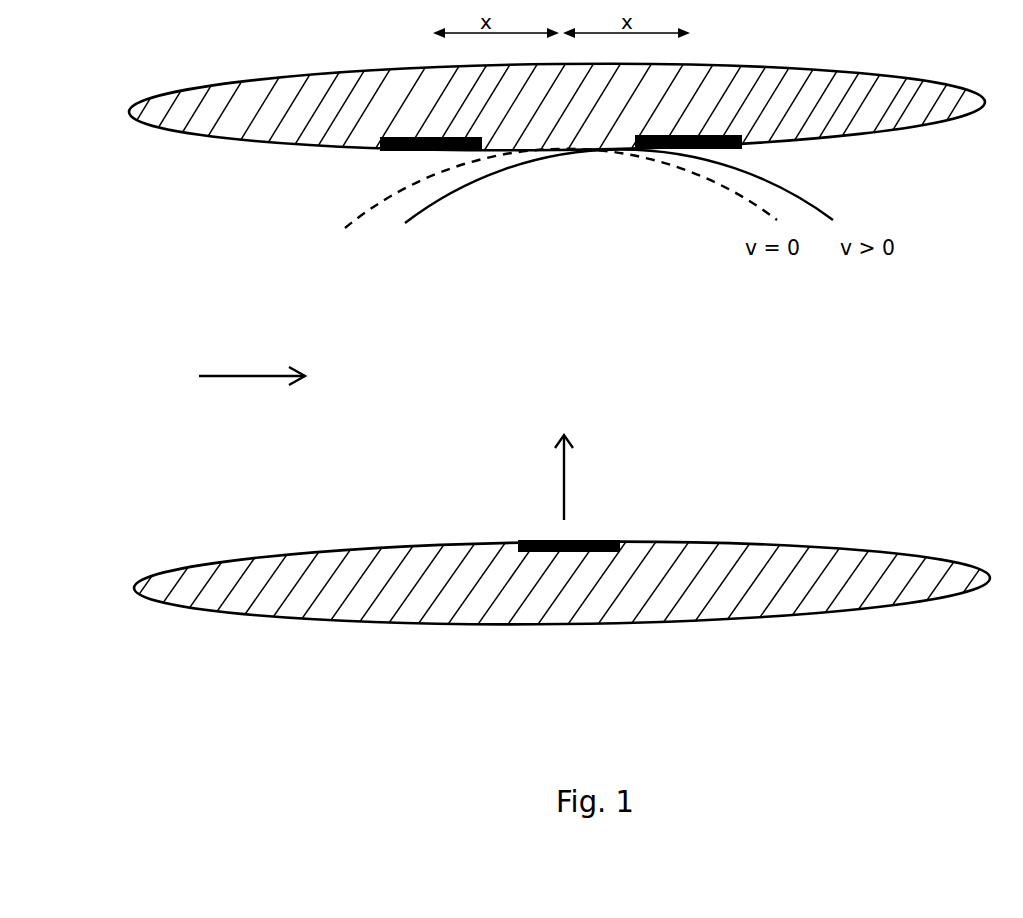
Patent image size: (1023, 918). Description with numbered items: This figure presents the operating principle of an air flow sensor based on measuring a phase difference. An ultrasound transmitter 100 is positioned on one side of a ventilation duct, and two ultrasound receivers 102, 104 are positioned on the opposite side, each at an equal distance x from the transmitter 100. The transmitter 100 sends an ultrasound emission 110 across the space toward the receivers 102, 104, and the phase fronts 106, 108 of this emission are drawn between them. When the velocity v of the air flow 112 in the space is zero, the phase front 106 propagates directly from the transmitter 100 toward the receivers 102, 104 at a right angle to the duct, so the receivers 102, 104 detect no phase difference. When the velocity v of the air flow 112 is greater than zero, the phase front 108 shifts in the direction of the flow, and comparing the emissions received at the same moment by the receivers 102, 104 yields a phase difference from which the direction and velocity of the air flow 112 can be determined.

The ultrasound transmitter 100 is at (590, 552).
The ultrasound receiver 102 is at (421, 140).
The ultrasound receiver 104 is at (700, 142).
The phase front 106 is at (387, 200).
The phase front 108 is at (803, 200).
The ultrasound emission 110 is at (564, 483).
The air flow 112 is at (232, 375).